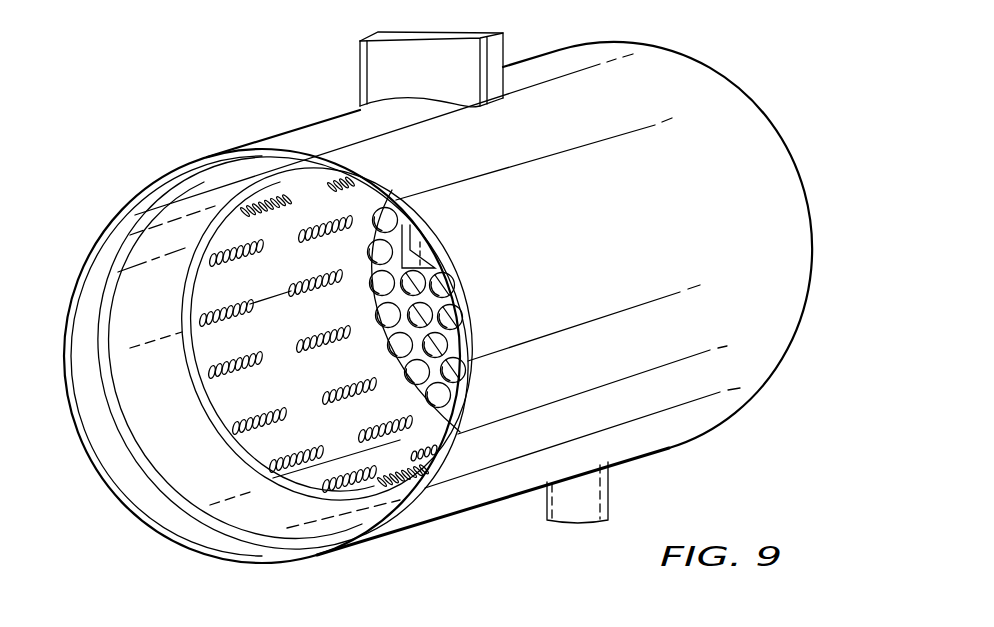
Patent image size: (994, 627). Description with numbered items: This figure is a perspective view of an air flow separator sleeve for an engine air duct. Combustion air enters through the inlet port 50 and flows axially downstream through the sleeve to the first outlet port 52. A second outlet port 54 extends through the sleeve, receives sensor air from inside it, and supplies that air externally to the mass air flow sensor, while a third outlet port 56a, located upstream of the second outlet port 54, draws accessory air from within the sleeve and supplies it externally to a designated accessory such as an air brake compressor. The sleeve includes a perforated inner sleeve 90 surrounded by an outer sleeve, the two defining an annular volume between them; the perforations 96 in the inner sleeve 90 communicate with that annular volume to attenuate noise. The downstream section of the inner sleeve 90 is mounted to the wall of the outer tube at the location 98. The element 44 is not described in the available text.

The shell wall 44 is at (320, 150).
The inlet port 50 is at (779, 136).
The first outlet port 52 is at (192, 447).
The second outlet port 54 is at (390, 67).
The third outlet port 56a is at (600, 488).
The inner sleeve 90 is at (235, 343).
The perforations 96 is at (218, 262).
The mounting location of downstream section 98 is at (204, 535).